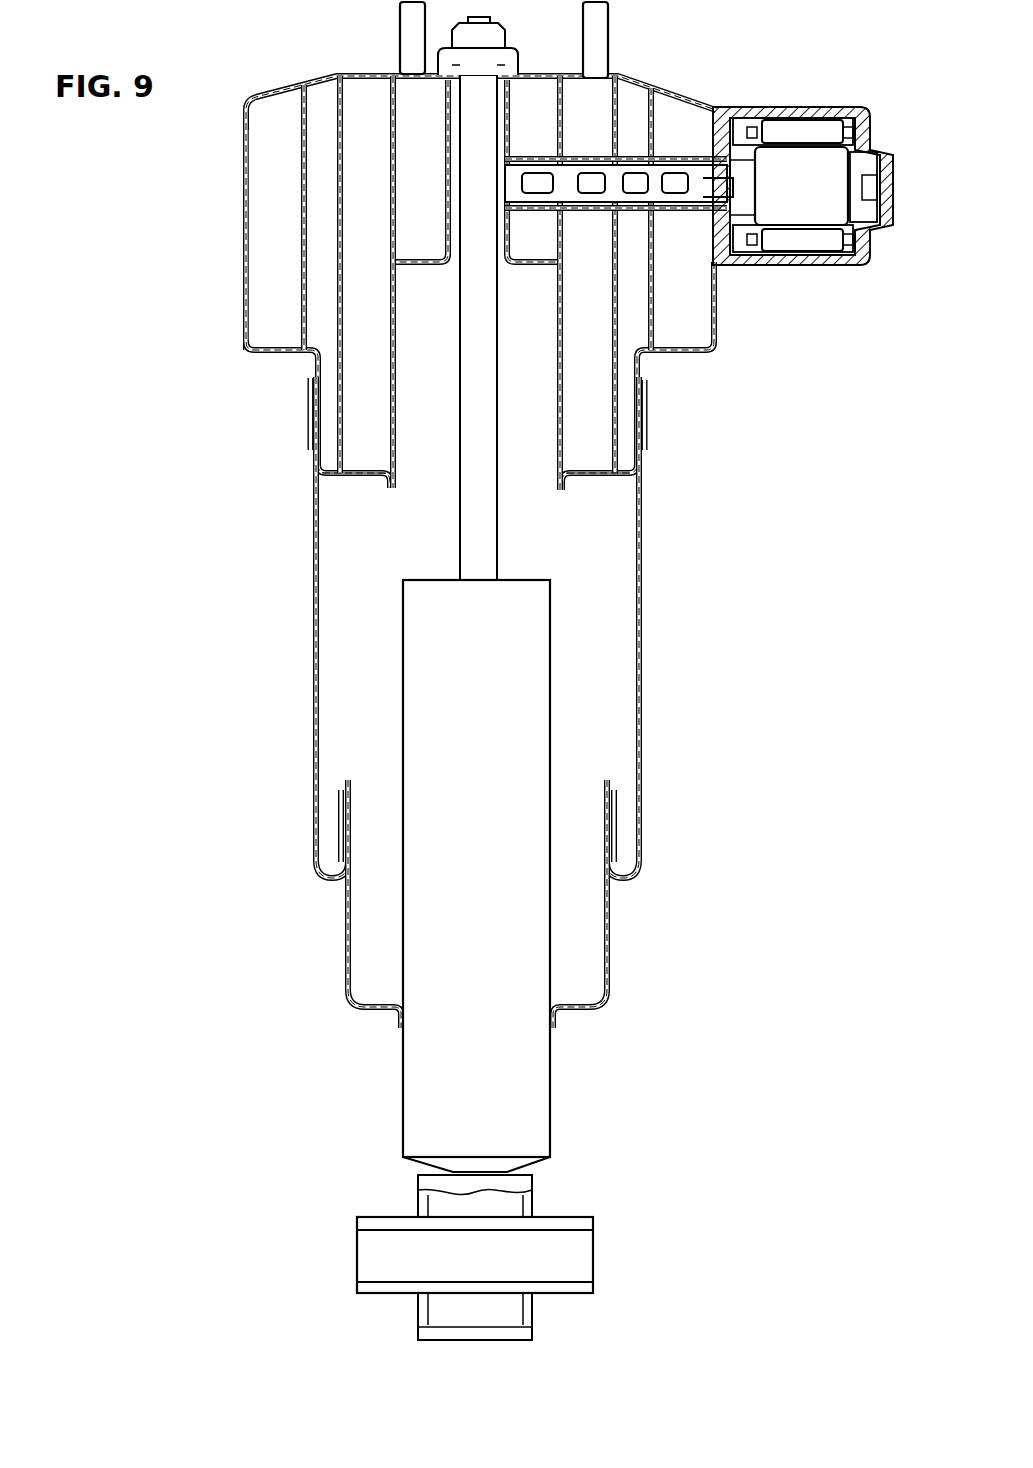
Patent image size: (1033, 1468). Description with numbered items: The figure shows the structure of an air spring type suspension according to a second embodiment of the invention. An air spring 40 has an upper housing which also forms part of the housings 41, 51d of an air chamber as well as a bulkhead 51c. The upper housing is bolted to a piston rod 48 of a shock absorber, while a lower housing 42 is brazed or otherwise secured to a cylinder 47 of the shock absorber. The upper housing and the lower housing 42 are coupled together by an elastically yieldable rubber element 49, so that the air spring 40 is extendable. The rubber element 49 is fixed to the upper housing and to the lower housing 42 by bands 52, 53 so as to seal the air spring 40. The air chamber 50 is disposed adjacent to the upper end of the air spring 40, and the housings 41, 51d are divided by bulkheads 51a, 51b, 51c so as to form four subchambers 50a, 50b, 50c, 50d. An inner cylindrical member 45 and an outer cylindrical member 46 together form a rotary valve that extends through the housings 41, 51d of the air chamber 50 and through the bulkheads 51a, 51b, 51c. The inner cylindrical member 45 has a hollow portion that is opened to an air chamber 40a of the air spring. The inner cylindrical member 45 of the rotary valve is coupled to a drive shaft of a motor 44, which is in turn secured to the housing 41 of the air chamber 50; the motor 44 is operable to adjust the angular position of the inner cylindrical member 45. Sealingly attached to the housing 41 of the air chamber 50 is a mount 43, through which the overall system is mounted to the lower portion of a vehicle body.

The air spring 40 is at (485, 678).
The air chamber 40a is at (340, 598).
The housing 41 is at (612, 475).
The lower housing 42 is at (605, 995).
The mount 43 is at (596, 28).
The motor 44 is at (840, 107).
The inner cylindrical member 45 is at (680, 215).
The outer cylindrical member 46 is at (660, 157).
The cylinder 47 is at (550, 688).
The piston rod 48 is at (497, 569).
The rubber element 49 is at (640, 620).
The air chamber 50 is at (243, 148).
The subchamber 50a is at (263, 175).
The subchamber 50b is at (318, 333).
The subchamber 50c is at (353, 445).
The subchamber 50d is at (403, 208).
The bulkhead 51a is at (300, 128).
The bulkhead 51b is at (338, 110).
The bulkhead 51c is at (393, 100).
The housing 51d is at (510, 100).
The band 52 is at (653, 405).
The band 53 is at (618, 828).